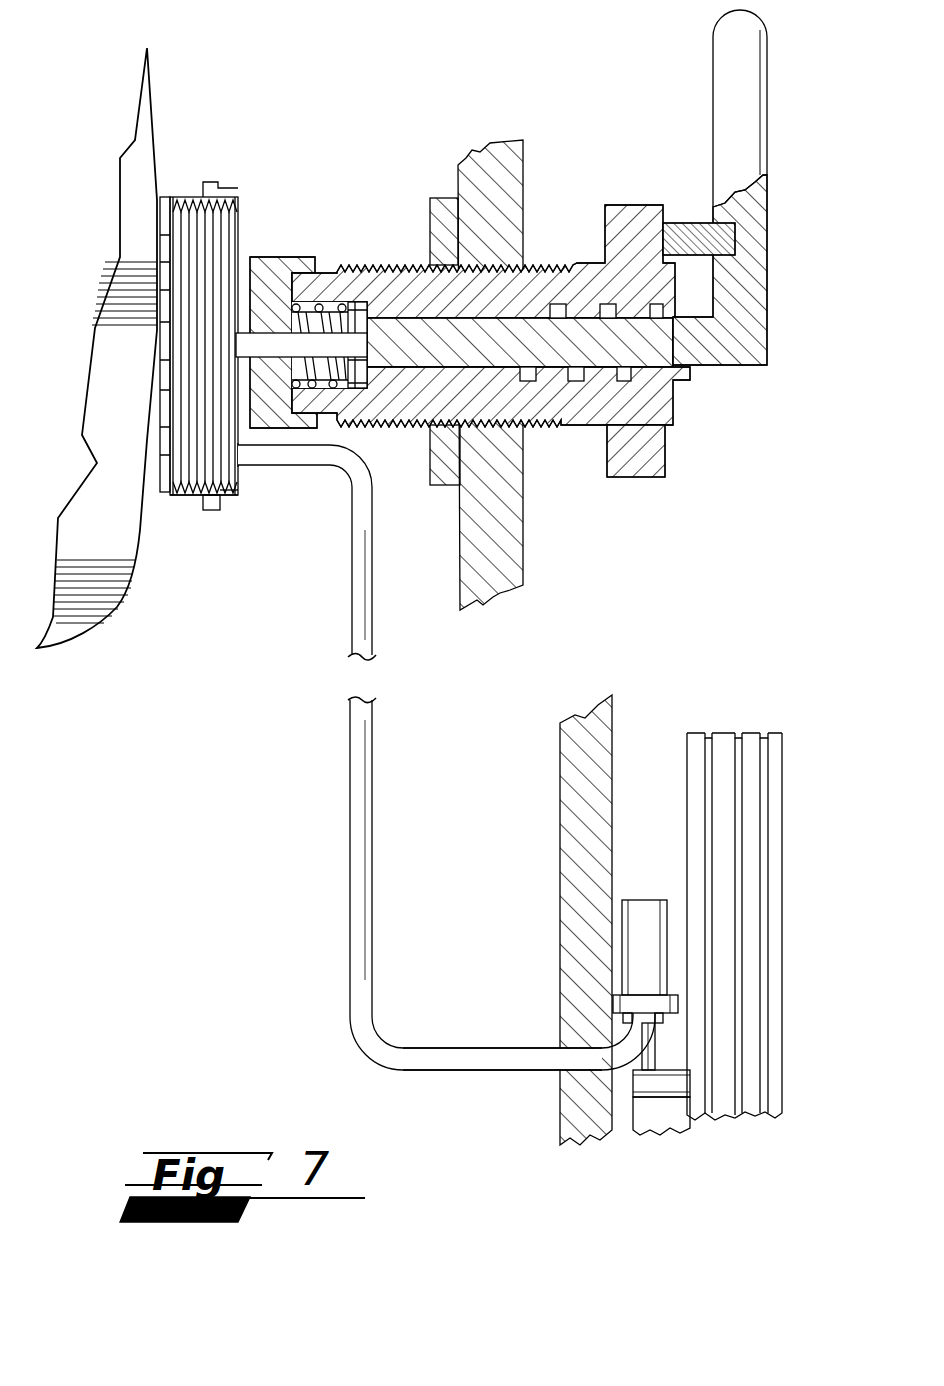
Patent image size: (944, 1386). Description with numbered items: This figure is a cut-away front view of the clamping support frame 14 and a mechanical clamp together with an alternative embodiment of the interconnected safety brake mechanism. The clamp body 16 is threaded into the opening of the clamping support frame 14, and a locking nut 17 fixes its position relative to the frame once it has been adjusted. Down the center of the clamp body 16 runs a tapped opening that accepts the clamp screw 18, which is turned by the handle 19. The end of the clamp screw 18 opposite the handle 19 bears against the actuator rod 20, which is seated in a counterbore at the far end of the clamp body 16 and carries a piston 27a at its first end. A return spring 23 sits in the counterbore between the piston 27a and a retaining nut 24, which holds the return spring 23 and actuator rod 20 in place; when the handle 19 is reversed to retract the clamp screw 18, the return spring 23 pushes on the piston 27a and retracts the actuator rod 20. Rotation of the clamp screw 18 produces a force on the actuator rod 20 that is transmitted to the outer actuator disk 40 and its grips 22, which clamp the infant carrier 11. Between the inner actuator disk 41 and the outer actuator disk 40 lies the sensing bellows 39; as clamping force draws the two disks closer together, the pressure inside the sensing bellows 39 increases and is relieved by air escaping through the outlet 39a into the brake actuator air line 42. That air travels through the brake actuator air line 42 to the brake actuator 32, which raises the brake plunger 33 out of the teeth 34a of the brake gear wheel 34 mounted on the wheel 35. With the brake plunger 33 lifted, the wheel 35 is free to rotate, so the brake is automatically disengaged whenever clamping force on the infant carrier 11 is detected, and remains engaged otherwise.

The infant carrier 11 is at (115, 622).
The clamping support frame 14 is at (487, 140).
The clamp body 16 is at (667, 462).
The locking nut 17 is at (440, 197).
The clamp screw 18 is at (690, 378).
The handle 19 is at (770, 80).
The actuator rod 20 is at (333, 340).
The grips 22 is at (163, 492).
The return spring 23 is at (297, 300).
The retaining nut 24 is at (251, 257).
The piston 27a is at (355, 300).
The brake actuator 32 is at (650, 913).
The brake plunger 33 is at (655, 1043).
The brake gear wheel 34 is at (645, 1137).
The teeth 34a is at (655, 1107).
The wheel 35 is at (740, 733).
The sensing bellows 39 is at (198, 218).
The outlet 39a is at (251, 471).
The outer actuator disk 40 is at (182, 495).
The inner actuator disk 41 is at (228, 513).
The brake actuator air line 42 is at (373, 545).